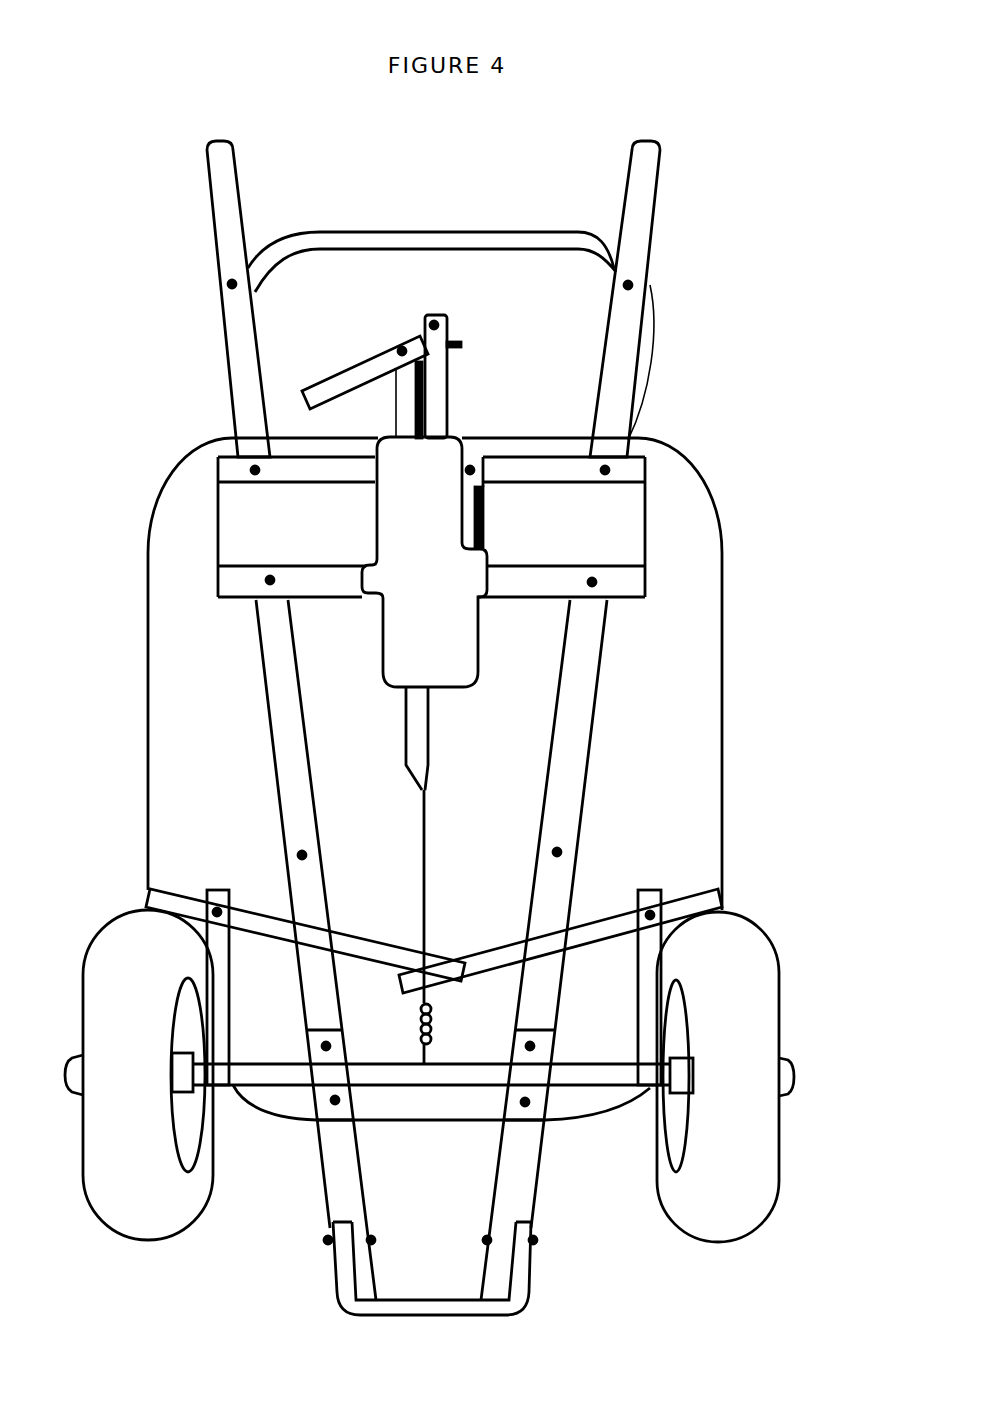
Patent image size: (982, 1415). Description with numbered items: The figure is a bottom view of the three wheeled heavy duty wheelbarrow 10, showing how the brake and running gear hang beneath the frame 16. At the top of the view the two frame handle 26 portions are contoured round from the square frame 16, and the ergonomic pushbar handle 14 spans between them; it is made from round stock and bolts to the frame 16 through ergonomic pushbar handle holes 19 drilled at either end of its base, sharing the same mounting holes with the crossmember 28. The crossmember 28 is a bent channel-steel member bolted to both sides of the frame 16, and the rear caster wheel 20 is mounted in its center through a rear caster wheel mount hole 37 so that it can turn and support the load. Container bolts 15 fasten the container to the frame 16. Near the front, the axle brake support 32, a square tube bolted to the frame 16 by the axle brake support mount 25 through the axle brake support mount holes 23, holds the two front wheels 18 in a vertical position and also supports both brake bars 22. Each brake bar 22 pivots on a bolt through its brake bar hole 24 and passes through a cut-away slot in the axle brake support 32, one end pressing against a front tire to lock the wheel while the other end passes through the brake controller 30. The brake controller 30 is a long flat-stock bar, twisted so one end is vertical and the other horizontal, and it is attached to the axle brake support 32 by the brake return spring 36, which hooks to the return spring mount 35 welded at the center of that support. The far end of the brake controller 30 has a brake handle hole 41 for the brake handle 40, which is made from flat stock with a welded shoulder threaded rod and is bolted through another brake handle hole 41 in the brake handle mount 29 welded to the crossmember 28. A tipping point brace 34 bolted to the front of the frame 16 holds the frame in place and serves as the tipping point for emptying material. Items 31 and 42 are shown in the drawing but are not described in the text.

The three wheeled heavy duty wheelbarrow 10 is at (718, 417).
The ergonomic pushbar handle 14 is at (445, 237).
The container bolts 15 is at (305, 856).
The frame 16 is at (290, 748).
The front wheels 18 is at (118, 1058).
The ergonomic pushbar handle holes 19 is at (230, 284).
The rear caster wheel 20 is at (415, 573).
The brake bar 22 is at (258, 918).
The axle brake support mount hole 23 is at (323, 1044).
The brake bar hole 24 is at (216, 908).
The axle brake support mount 25 is at (533, 1044).
The frame handle 26 is at (222, 188).
The crossmember 28 is at (290, 520).
The brake handle mount 29 is at (437, 397).
The brake controller 30 is at (413, 740).
The cross bar 31 is at (608, 470).
The axle brake support 32 is at (263, 1070).
The tipping point brace 34 is at (430, 1317).
The return spring mount 35 is at (432, 1050).
The brake return spring 36 is at (418, 1027).
The rear caster wheel mount hole 37 is at (479, 490).
The brake handle 40 is at (337, 385).
The brake handle hole 41 is at (402, 349).
The stop pin 42 is at (462, 345).